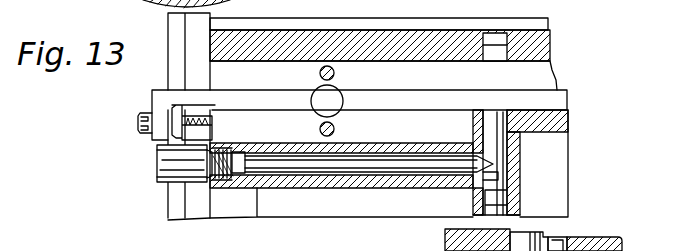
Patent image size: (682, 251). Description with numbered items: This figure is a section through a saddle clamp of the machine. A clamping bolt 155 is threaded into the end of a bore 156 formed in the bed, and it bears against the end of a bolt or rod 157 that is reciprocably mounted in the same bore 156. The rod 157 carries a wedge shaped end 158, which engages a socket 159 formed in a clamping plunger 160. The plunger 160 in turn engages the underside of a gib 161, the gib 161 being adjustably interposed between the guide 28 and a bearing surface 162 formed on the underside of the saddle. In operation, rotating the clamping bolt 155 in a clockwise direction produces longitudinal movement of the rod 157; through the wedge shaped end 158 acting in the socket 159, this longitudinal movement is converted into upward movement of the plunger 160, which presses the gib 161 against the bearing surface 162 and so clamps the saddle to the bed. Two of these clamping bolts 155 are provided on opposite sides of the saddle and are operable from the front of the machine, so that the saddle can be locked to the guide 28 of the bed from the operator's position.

The guide 28 is at (543, 90).
The gib 161 is at (558, 103).
The bearing surface 162 is at (567, 122).
The clamping plunger 160 is at (497, 155).
The wedge shaped end 158 is at (498, 170).
The socket 159 is at (503, 183).
The clamping bolt 155 is at (165, 160).
The bore 156 is at (237, 183).
The rod 157 is at (440, 177).